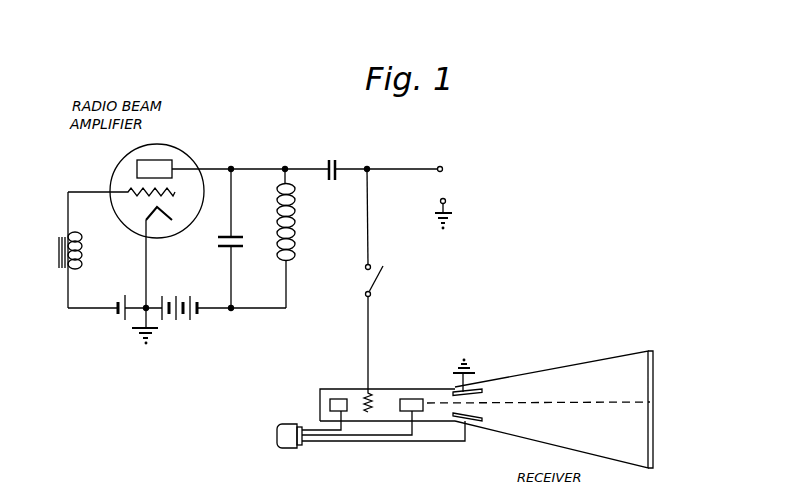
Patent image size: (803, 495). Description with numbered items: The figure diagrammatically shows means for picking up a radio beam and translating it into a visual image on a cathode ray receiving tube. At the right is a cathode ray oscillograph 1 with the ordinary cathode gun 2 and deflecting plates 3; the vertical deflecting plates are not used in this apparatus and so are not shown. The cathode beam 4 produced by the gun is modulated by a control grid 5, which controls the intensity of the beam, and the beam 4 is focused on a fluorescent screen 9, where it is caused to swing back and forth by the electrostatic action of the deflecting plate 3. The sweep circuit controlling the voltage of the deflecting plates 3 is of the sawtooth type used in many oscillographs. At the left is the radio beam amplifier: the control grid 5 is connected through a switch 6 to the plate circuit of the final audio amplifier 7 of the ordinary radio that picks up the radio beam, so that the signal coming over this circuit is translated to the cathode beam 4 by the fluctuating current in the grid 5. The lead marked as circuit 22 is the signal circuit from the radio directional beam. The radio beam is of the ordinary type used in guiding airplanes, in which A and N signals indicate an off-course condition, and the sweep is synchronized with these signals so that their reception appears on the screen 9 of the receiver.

The cathode ray oscillograph 1 is at (580, 362).
The cathode gun 2 is at (400, 411).
The deflecting plates 3 is at (483, 419).
The cathode beam 4 is at (584, 405).
The control grid 5 is at (370, 394).
The switch 6 is at (386, 282).
The final audio amplifier 7 is at (172, 160).
The screen 9 is at (654, 408).
The signal circuit 22 is at (389, 167).